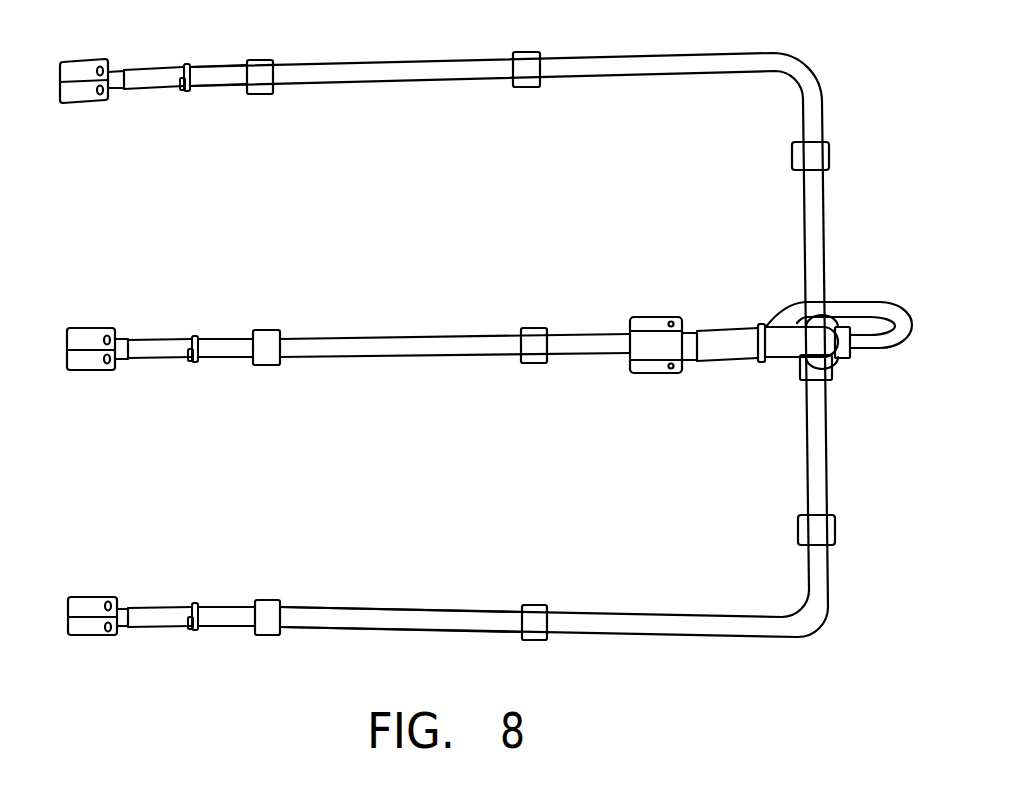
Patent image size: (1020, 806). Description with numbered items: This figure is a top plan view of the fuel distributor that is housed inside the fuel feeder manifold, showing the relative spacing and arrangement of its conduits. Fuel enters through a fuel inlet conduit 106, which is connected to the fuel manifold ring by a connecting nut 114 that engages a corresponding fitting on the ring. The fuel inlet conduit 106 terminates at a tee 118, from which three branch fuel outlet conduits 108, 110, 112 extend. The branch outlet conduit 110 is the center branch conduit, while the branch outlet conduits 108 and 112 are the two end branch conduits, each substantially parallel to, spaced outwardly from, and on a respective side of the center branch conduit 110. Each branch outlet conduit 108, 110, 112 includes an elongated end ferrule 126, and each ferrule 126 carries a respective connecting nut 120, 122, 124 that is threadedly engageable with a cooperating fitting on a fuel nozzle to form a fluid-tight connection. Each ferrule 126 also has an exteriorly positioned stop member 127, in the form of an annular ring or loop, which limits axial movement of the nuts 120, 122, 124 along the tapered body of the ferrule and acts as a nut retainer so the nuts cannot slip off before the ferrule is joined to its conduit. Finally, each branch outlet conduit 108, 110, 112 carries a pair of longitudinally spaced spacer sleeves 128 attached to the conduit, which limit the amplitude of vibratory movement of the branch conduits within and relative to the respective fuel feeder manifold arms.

The fuel inlet conduit 106 is at (720, 358).
The branch fuel outlet conduit 108 is at (625, 637).
The branch fuel outlet conduit 110 is at (356, 354).
The branch fuel outlet conduit 112 is at (403, 78).
The connecting nut 114 is at (650, 317).
The tee 118 is at (832, 372).
The connecting nut 120 is at (78, 597).
The connecting nut 122 is at (85, 328).
The connecting nut 124 is at (82, 62).
The end ferrule 126 is at (148, 87).
The stop member 127 is at (188, 64).
The spacer sleeve 128 is at (262, 94).